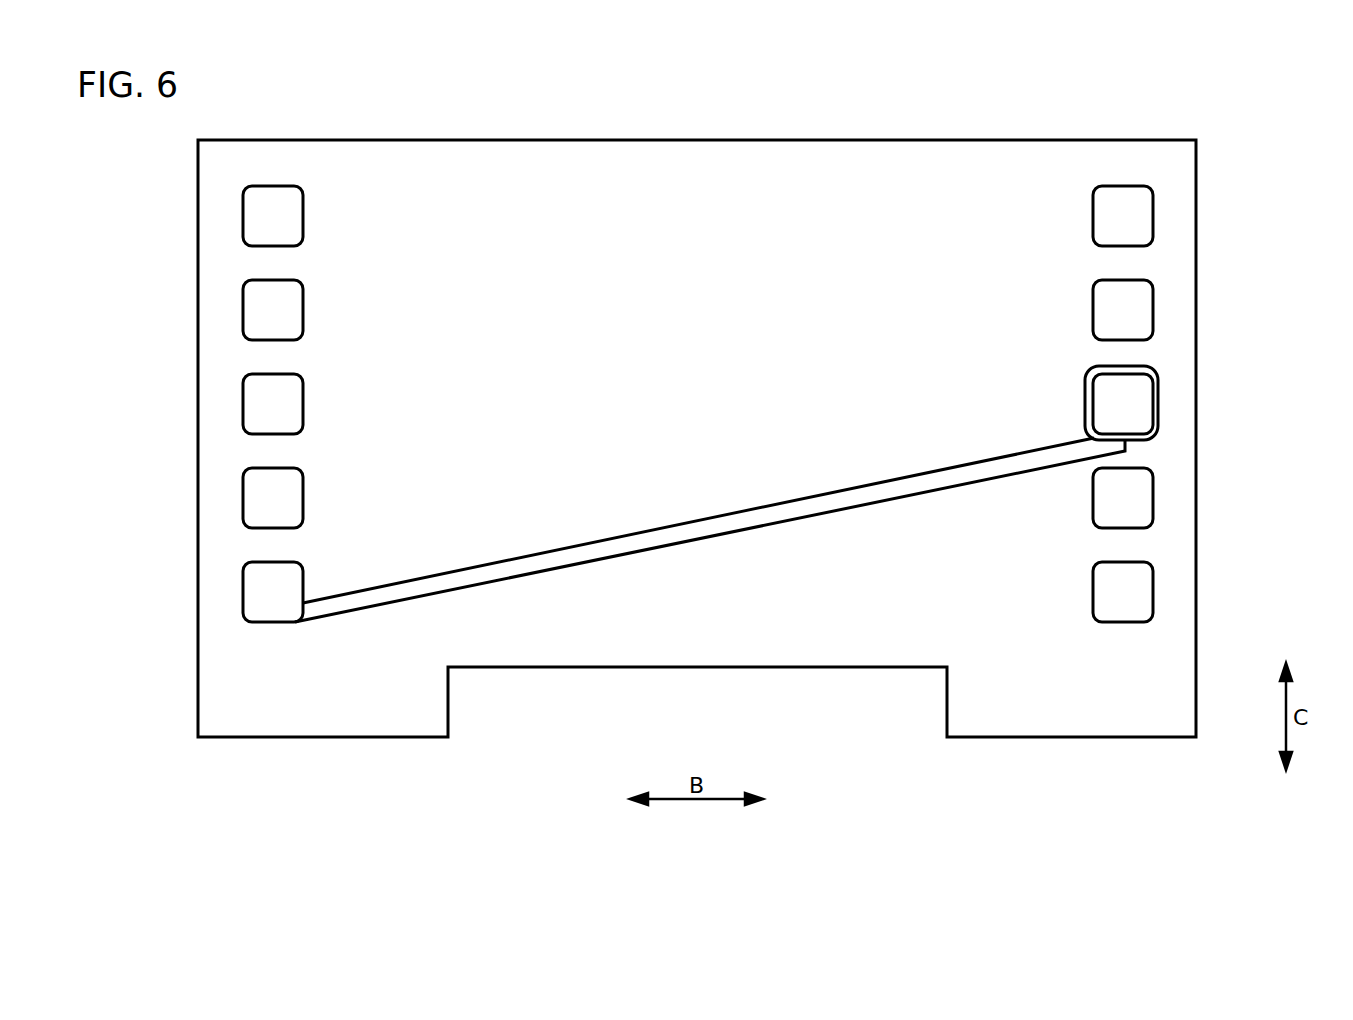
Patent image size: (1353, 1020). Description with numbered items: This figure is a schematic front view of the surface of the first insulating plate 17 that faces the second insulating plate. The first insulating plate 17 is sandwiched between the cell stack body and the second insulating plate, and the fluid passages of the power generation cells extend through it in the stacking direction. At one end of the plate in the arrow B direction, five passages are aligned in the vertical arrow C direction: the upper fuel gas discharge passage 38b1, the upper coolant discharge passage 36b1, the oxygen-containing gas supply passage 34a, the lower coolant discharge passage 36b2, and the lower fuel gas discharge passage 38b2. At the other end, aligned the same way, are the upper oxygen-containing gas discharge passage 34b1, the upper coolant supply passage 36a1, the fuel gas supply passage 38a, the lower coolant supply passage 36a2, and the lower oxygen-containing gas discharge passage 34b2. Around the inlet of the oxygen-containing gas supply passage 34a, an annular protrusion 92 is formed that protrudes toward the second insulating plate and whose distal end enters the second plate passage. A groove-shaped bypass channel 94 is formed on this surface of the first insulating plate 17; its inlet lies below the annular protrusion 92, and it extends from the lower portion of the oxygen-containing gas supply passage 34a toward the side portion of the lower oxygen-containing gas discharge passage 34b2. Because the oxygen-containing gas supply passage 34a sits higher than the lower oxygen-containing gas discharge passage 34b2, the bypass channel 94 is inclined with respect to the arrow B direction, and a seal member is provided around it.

The first insulating plate 17 is at (277, 99).
The upper oxygen-containing gas discharge passage 34b1 is at (262, 215).
The upper coolant supply passage 36a1 is at (262, 308).
The fuel gas supply passage 38a is at (262, 402).
The lower coolant supply passage 36a2 is at (262, 496).
The lower oxygen-containing gas discharge passage 34b2 is at (262, 590).
The upper fuel gas discharge passage 38b1 is at (1133, 214).
The upper coolant discharge passage 36b1 is at (1133, 308).
The oxygen-containing gas supply passage 34a is at (1133, 402).
The annular protrusion 92 is at (1085, 393).
The lower coolant discharge passage 36b2 is at (1133, 496).
The lower fuel gas discharge passage 38b2 is at (1133, 590).
The bypass channel 94 is at (762, 517).